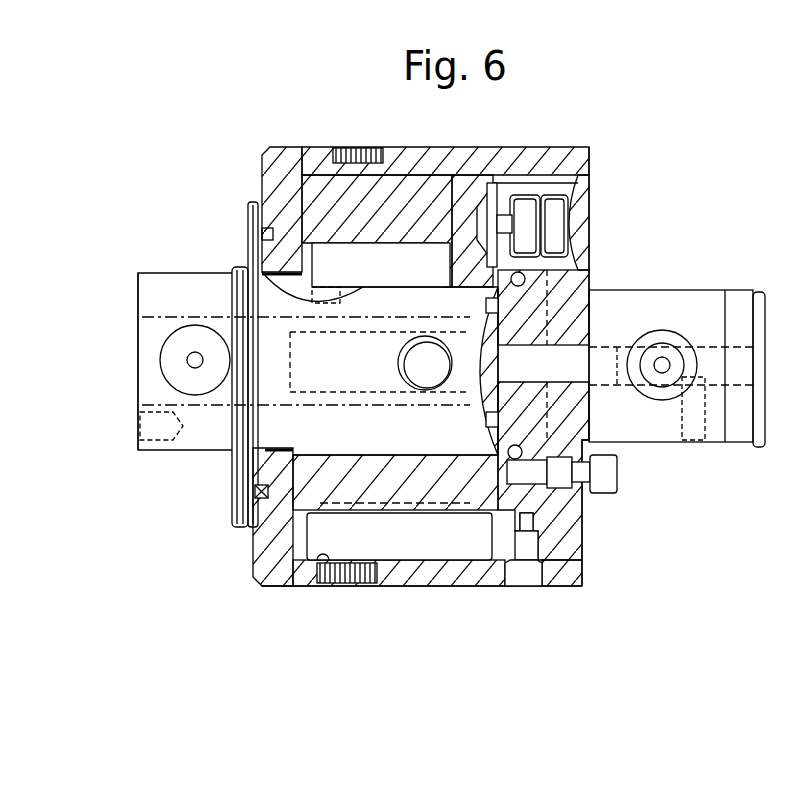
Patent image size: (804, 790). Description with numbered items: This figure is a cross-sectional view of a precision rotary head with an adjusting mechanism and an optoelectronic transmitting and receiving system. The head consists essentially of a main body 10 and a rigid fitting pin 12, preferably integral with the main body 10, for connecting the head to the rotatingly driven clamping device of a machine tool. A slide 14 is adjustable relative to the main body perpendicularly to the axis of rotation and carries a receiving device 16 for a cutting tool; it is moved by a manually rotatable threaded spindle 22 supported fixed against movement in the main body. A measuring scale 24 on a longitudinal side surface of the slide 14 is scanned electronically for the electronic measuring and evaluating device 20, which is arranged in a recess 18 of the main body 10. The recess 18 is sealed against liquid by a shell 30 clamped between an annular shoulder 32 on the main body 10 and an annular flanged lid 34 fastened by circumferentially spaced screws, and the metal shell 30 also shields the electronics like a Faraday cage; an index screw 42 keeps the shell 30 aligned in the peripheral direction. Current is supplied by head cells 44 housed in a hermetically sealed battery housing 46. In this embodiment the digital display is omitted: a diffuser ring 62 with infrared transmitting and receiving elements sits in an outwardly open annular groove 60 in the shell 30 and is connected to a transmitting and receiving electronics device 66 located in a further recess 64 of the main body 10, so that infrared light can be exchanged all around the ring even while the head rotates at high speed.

The main body 10 is at (563, 523).
The rigid fitting pin 12 is at (697, 318).
The slide 14 is at (273, 427).
The receiving device 16 is at (134, 452).
The recess 18 is at (313, 148).
The electronic measuring and evaluating device 20 is at (312, 247).
The threaded spindle 22 is at (432, 372).
The measuring scale 24 is at (232, 273).
The shell 30 is at (438, 582).
The annular shoulder 32 is at (575, 573).
The annular flanged lid 34 is at (267, 547).
The index screw 42 is at (535, 582).
The head cells 44 is at (530, 192).
The battery housing 46 is at (590, 233).
The annular groove 60 is at (305, 582).
The diffuser ring 62 is at (339, 582).
The further recess 64 is at (290, 582).
The transmitting and receiving electronics device 66 is at (398, 533).